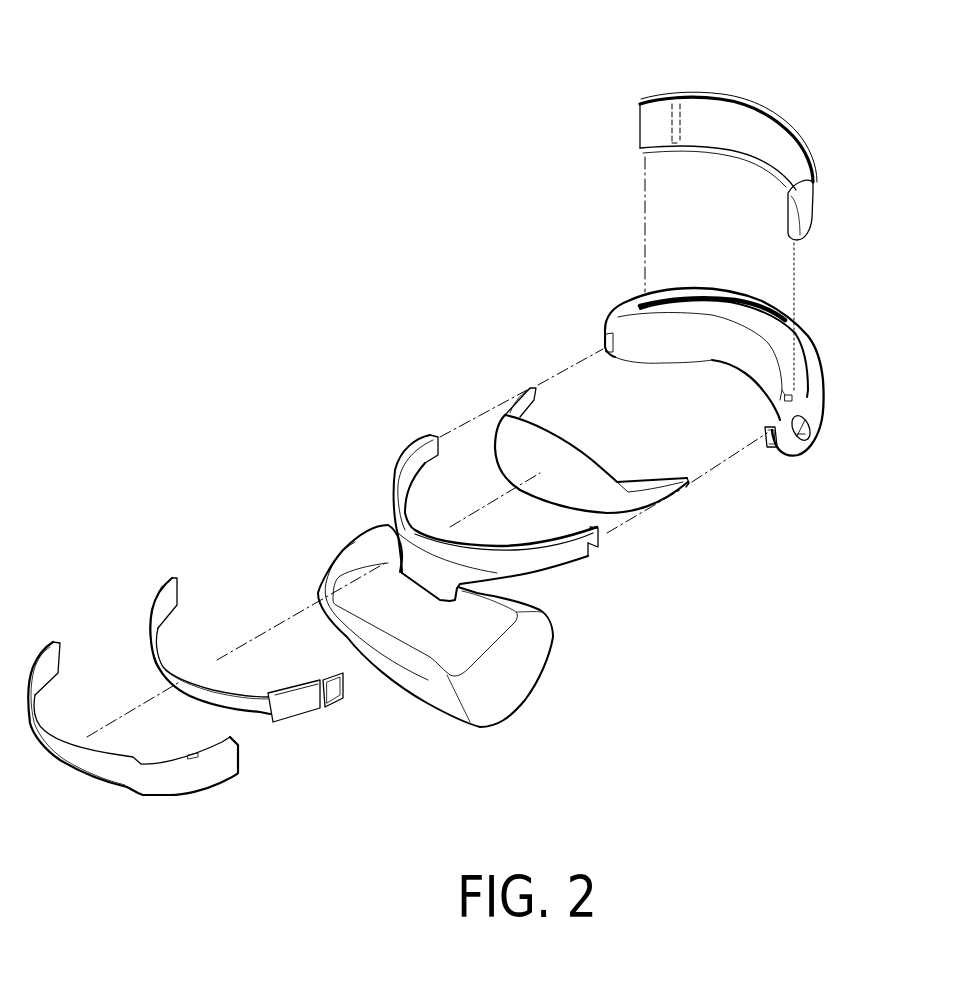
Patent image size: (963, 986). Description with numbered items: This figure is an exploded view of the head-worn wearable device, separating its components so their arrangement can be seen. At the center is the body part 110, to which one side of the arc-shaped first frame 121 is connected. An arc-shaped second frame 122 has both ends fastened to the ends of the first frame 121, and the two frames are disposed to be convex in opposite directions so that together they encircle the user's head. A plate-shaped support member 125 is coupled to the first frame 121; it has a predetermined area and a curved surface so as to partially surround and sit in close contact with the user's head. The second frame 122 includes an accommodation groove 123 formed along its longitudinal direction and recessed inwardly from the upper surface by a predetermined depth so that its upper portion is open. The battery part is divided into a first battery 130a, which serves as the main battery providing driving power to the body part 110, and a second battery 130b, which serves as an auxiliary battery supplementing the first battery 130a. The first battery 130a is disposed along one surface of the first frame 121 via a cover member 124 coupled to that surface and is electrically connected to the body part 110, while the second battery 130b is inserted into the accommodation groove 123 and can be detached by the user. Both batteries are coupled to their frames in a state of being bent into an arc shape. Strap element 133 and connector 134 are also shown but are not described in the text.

The body part 110 is at (520, 675).
The first frame 121 is at (395, 458).
The second frame 122 is at (728, 362).
The accommodation groove 123 is at (770, 310).
The cover member 124 is at (97, 773).
The support member 125 is at (647, 500).
The first battery 130a is at (157, 595).
The second battery 130b is at (672, 123).
The top strap 133 is at (650, 100).
The connector 134 is at (333, 700).